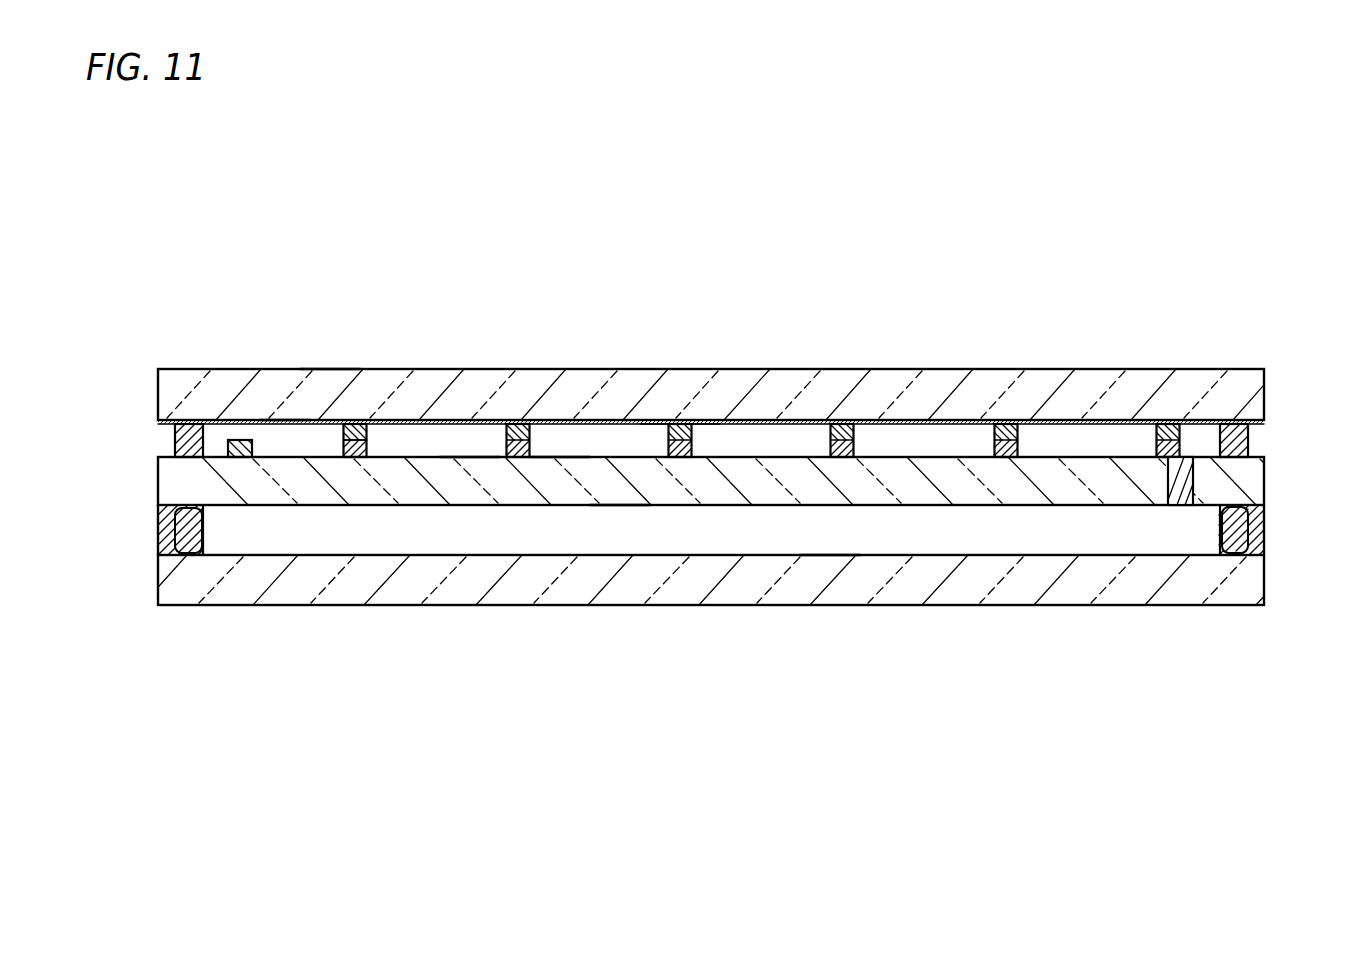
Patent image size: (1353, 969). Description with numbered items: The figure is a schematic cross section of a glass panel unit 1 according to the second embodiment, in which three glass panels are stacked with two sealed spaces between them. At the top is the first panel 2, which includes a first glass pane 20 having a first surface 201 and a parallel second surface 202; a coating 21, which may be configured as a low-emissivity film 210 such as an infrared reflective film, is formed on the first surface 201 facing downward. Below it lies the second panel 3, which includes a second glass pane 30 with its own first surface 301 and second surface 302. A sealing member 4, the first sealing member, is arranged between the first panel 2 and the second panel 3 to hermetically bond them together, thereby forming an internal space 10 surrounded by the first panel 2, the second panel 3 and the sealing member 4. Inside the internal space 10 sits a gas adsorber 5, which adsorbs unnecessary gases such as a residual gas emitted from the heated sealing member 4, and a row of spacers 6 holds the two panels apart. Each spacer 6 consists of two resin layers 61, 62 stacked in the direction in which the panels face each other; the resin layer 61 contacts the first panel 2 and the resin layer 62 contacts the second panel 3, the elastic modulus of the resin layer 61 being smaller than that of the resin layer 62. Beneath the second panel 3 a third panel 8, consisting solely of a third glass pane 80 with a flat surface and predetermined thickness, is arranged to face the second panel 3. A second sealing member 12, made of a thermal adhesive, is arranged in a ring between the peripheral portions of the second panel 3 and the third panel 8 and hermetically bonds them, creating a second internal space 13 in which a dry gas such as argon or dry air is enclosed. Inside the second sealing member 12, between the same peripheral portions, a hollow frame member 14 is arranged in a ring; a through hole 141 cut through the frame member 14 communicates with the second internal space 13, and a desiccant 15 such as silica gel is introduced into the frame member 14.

The glass panel unit 1 is at (157, 346).
The first panel 2 is at (1262, 392).
The first glass pane 20 is at (873, 395).
The first surface 201 is at (283, 430).
The second surface 202 is at (331, 369).
The coating 21 is at (805, 421).
The low-emissivity film 210 is at (680, 421).
The second panel 3 is at (1253, 481).
The second glass pane 30 is at (950, 487).
The first surface 301 is at (556, 455).
The second surface 302 is at (618, 506).
The sealing member 4 is at (173, 439).
The gas adsorber 5 is at (238, 442).
The spacer 6 is at (395, 362).
The resin layer 61 is at (352, 437).
The resin layer 62 is at (348, 457).
The internal space 10 is at (471, 442).
The second sealing member 12 is at (166, 533).
The second internal space 13 is at (823, 536).
The hollow frame member 14 is at (1220, 547).
The through hole 141 is at (1220, 526).
The desiccant 15 is at (1248, 535).
The third panel 8 is at (1260, 582).
The third glass pane 80 is at (1178, 594).